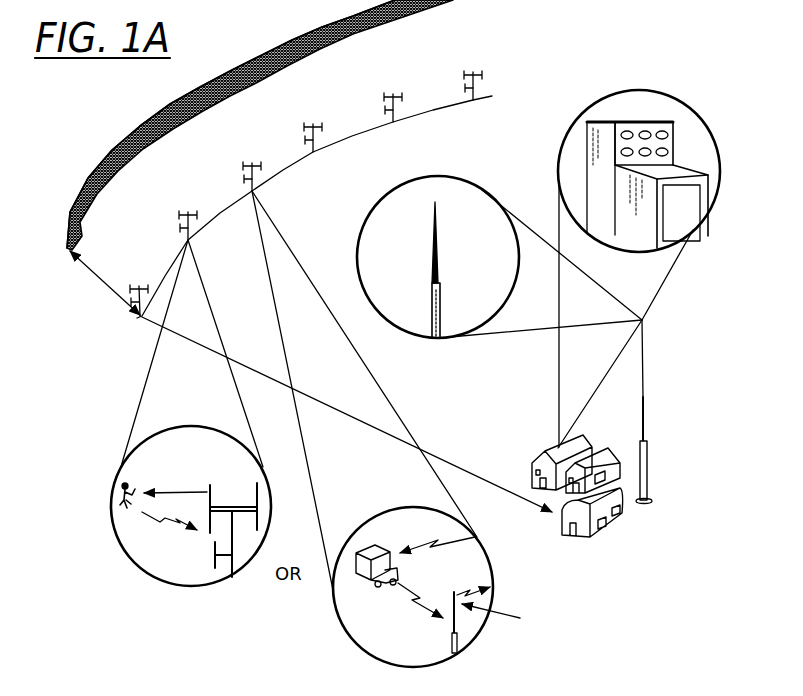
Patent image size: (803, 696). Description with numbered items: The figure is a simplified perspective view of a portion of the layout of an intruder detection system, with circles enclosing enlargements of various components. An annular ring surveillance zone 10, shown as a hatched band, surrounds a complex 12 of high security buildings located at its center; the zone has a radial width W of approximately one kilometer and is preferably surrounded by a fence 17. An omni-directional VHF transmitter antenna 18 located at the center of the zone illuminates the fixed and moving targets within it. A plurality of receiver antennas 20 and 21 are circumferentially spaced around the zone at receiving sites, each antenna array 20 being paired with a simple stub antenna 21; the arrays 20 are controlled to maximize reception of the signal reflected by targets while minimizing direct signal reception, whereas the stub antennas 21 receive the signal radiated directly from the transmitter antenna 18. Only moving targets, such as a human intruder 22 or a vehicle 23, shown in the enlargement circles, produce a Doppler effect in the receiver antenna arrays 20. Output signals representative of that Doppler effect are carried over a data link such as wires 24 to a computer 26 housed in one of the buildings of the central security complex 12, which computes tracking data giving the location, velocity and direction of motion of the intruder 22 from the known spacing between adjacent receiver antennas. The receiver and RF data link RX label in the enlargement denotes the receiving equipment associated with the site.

The annular ring surveillance zone 10 is at (185, 146).
The fence 17 is at (94, 176).
The receiver antennas (arrays) 20 is at (188, 213).
The receiver antennas (stub antennas) 21 is at (180, 228).
The human intruder 22 is at (118, 503).
The vehicle 23 is at (358, 570).
The wires (data link) 24 is at (458, 466).
The computer 26 is at (595, 128).
The omni-directional VHF transmitter antenna 18 is at (647, 443).
The complex of high security buildings 12 is at (610, 520).
The radial width W is at (105, 283).
The receiver and RF data link RX is at (536, 647).